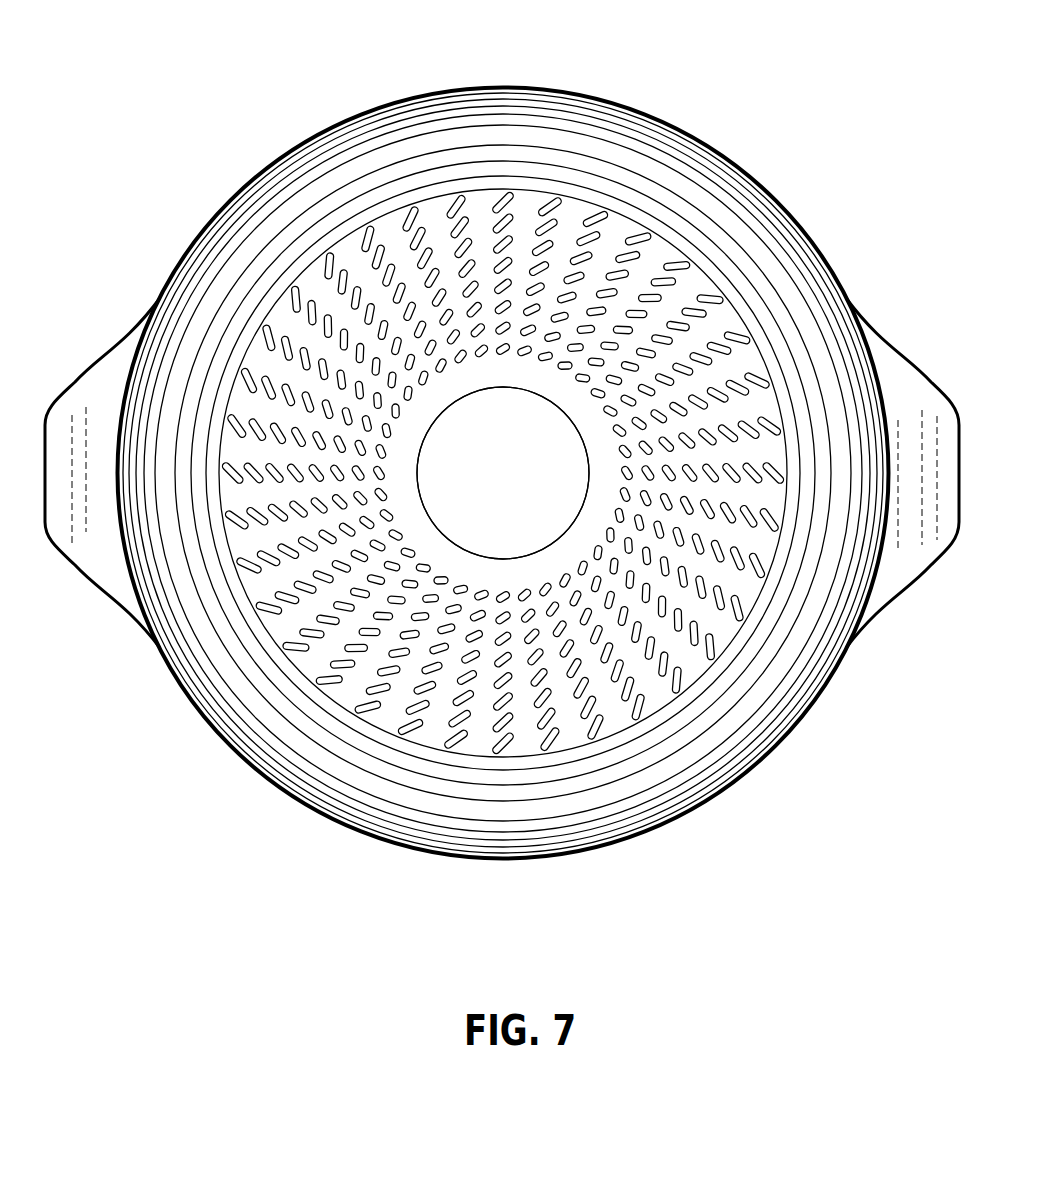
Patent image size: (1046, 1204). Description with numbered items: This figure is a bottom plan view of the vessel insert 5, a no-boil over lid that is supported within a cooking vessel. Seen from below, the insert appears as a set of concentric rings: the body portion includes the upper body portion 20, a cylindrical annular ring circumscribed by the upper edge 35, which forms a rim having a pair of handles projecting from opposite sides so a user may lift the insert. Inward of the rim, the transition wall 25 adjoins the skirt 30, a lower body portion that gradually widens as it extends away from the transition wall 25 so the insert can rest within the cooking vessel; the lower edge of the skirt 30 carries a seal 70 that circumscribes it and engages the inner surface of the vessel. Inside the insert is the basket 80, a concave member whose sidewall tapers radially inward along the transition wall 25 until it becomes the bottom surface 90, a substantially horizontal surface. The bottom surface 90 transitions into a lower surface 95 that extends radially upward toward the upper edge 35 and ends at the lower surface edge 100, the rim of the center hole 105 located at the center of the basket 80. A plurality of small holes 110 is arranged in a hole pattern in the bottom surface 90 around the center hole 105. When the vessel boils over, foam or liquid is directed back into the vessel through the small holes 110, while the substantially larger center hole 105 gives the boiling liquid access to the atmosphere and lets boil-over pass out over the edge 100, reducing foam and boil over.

The vessel insert 5 is at (205, 78).
The upper body portion 20 is at (417, 115).
The transition wall 25 is at (509, 140).
The skirt 30 is at (606, 175).
The upper edge 35 is at (352, 118).
The seal 70 is at (358, 753).
The basket 80 is at (760, 398).
The bottom surface 90 is at (365, 665).
The lower surface 95 is at (473, 575).
The lower surface edge 100 is at (562, 415).
The center hole 105 is at (583, 445).
The small holes 110 is at (717, 643).